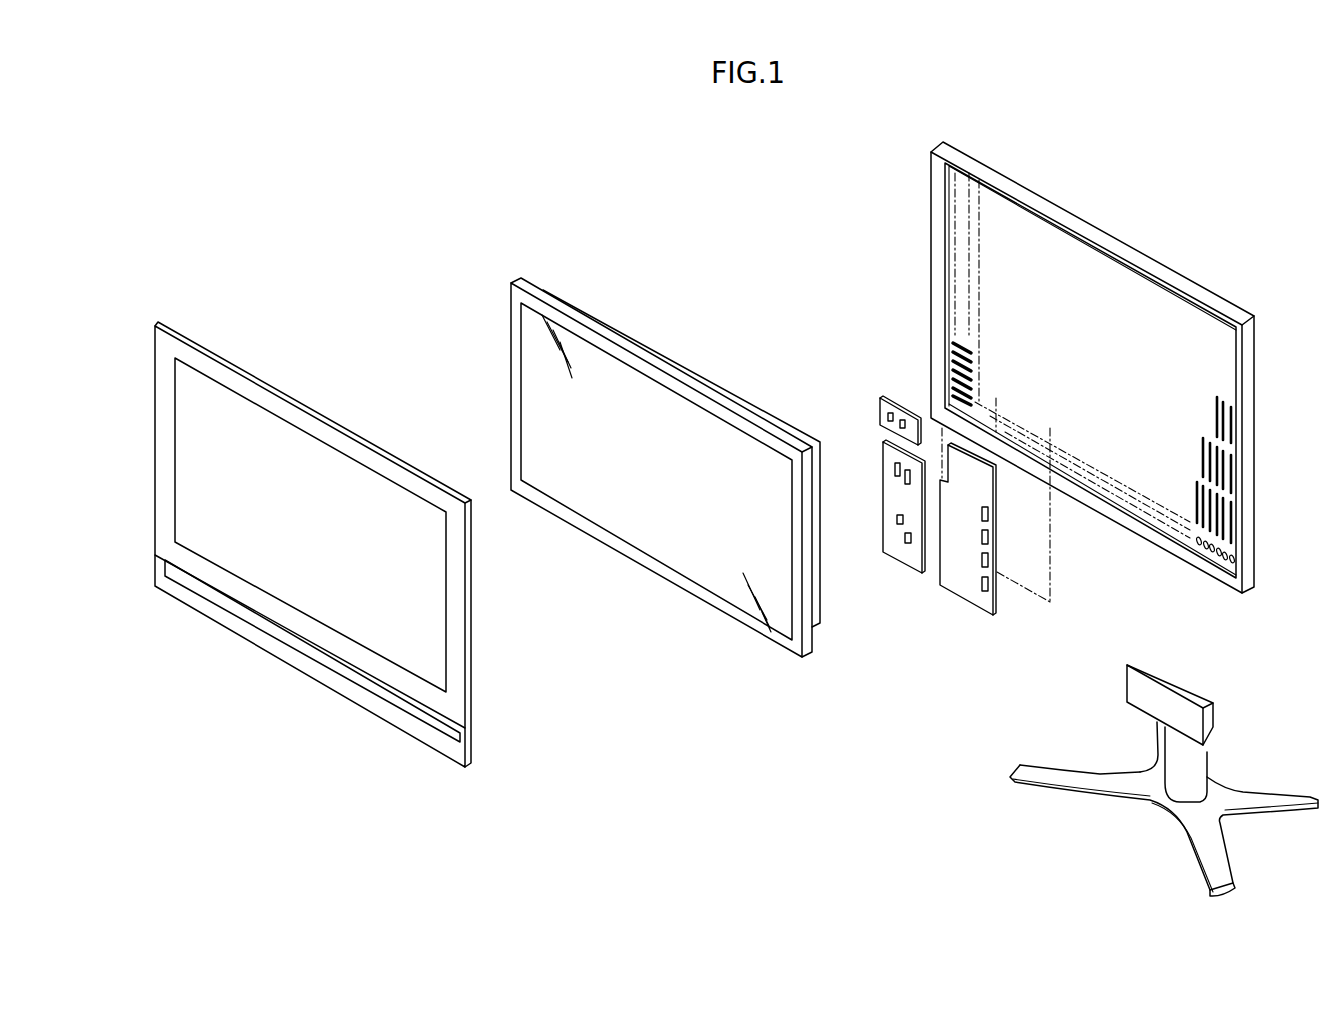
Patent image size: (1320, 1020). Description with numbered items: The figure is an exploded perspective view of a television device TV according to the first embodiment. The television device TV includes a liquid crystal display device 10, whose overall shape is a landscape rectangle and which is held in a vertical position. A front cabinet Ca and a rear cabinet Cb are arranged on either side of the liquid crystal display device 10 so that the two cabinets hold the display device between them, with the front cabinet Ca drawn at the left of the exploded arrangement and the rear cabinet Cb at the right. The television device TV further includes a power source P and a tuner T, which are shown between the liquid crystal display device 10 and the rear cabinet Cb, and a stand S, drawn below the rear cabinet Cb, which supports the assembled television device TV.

The television device TV is at (686, 222).
The liquid crystal display device 10 is at (612, 322).
The front cabinet Ca is at (296, 400).
The rear cabinet Cb is at (1085, 222).
The tuner T is at (897, 562).
The power source P is at (960, 598).
The stand S is at (1080, 793).